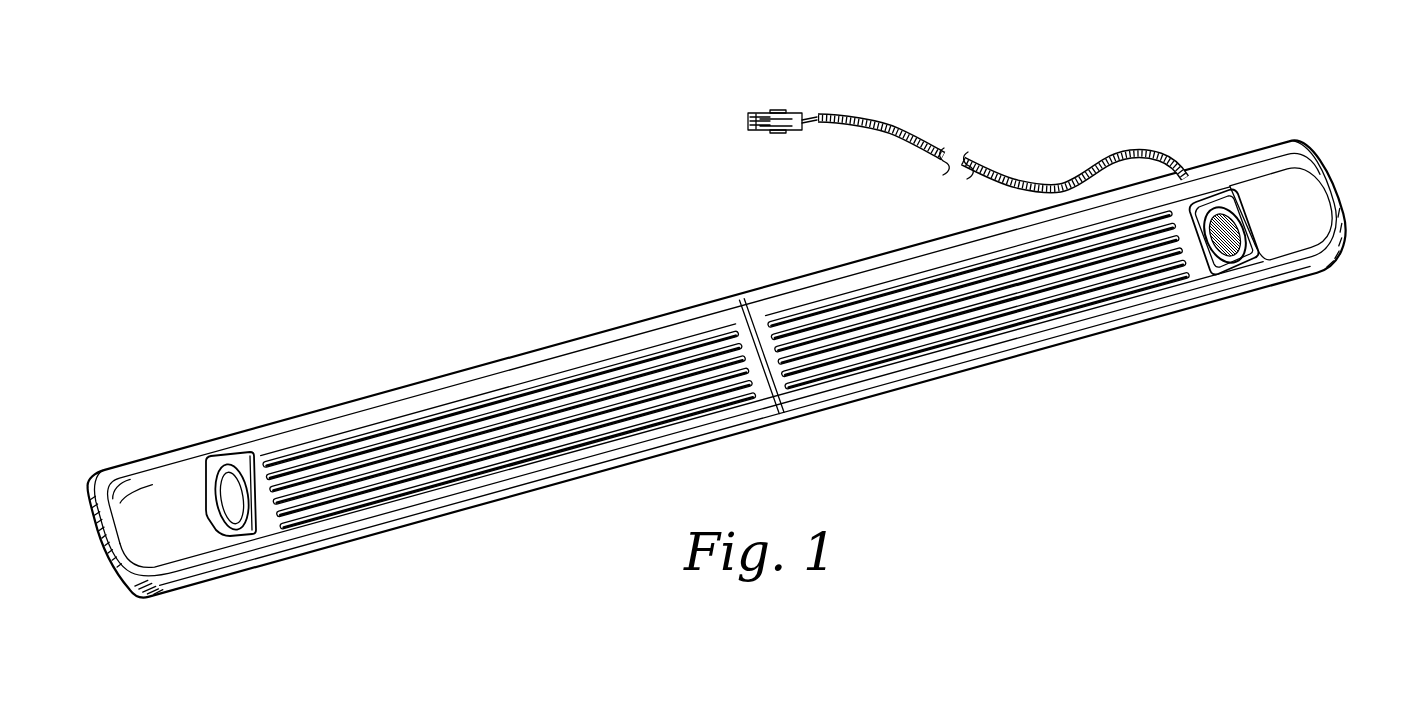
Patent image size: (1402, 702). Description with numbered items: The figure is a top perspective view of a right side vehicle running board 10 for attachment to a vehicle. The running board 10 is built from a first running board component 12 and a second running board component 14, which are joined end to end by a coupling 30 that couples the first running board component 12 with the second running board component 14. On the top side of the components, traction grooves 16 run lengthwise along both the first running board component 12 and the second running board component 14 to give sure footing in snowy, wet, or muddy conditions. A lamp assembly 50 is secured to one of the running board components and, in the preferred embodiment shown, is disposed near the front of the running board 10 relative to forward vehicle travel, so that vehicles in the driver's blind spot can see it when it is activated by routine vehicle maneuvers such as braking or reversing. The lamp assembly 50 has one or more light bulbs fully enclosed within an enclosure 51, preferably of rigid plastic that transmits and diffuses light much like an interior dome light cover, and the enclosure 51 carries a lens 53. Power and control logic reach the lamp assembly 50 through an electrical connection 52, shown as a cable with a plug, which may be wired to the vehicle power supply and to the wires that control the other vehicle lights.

The vehicle running board 10 is at (561, 203).
The first running board component 12 is at (568, 480).
The second running board component 14 is at (1005, 365).
The traction grooves 16 is at (648, 362).
The coupling 30 is at (783, 398).
The lamp assembly 50 is at (1222, 203).
The enclosure 51 is at (1283, 192).
The electrical connection 52 is at (872, 116).
The lens 53 is at (1240, 265).